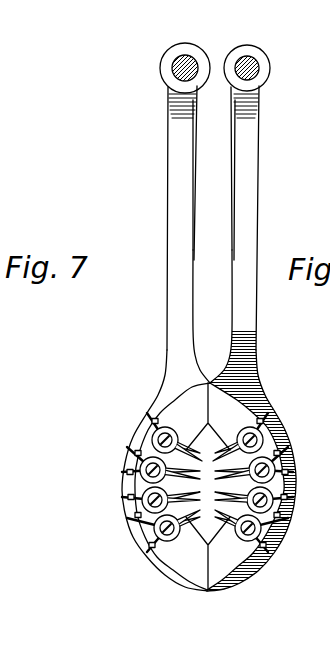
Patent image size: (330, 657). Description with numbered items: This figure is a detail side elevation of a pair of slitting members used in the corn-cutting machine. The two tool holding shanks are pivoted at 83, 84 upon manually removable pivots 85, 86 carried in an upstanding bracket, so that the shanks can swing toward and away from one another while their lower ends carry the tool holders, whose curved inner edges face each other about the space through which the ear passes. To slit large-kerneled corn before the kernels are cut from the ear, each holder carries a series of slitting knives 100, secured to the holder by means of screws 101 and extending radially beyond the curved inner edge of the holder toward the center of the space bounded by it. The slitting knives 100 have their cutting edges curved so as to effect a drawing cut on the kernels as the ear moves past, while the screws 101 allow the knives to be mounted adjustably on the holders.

The pivot point 83 is at (253, 49).
The pivot point 84 is at (184, 48).
The manually removable pivot 85 is at (259, 69).
The manually removable pivot 86 is at (171, 66).
The slitting knife 100 is at (126, 514).
The screw 101 is at (148, 527).